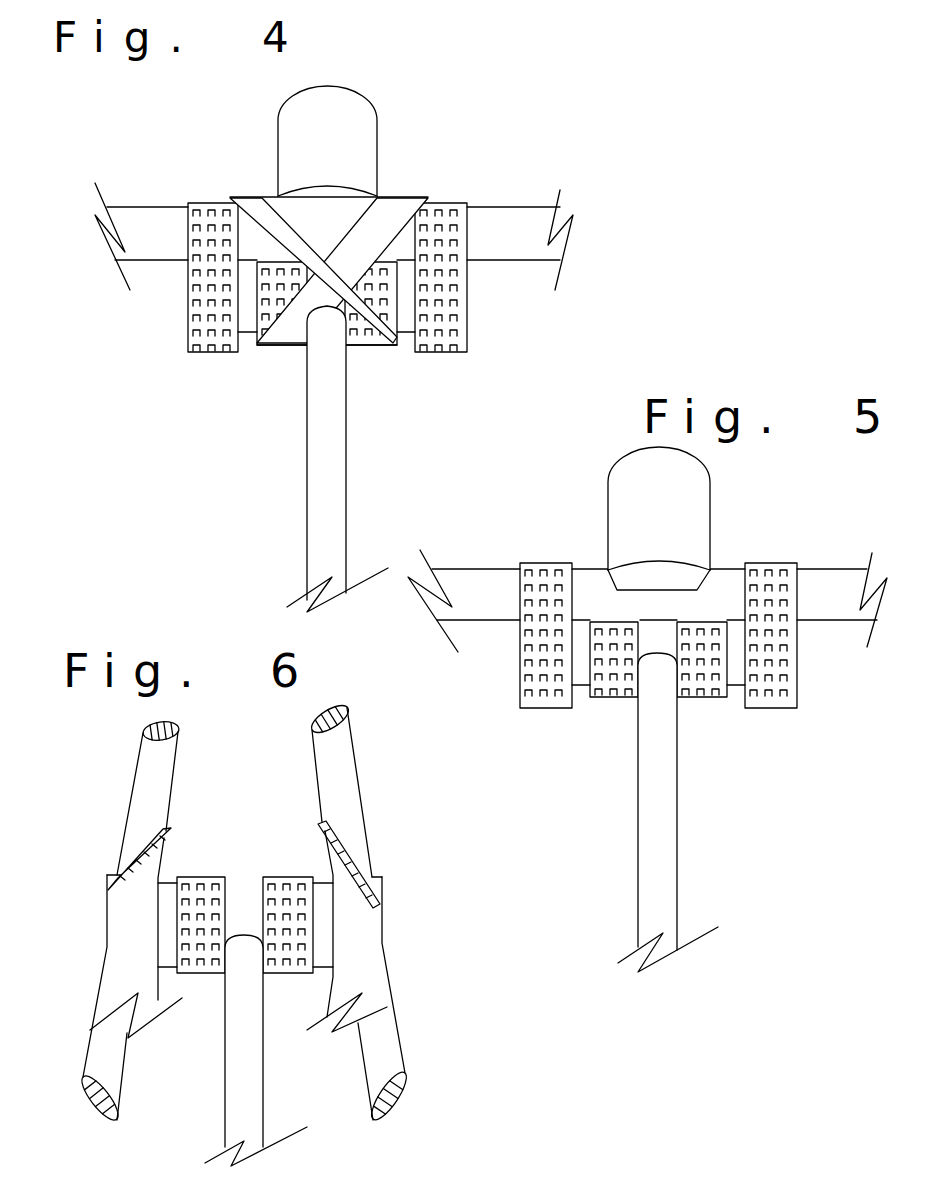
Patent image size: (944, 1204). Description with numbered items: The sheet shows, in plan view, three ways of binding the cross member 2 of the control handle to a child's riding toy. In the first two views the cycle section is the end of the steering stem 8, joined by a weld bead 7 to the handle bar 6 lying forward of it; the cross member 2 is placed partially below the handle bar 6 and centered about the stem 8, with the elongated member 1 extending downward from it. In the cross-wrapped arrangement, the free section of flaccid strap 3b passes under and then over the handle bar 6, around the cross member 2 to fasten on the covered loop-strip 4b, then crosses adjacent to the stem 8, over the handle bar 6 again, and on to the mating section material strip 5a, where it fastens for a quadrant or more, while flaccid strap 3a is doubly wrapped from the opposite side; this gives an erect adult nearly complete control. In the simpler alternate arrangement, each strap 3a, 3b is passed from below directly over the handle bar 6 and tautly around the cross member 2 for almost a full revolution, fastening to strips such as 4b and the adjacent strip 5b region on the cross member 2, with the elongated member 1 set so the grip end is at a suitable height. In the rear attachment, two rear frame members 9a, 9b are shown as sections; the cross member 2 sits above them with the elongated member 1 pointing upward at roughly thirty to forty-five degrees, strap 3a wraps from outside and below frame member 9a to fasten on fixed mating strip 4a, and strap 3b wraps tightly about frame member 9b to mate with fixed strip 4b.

In FIG. 4, the elongated member 1 is at (323, 502).
In FIG. 5, the elongated member 1 is at (655, 828).
In FIG. 6, the elongated member 1 is at (240, 1060).
In FIG. 4, the cross member 2 is at (397, 343).
In FIG. 5, the cross member 2 is at (578, 668).
In FIG. 6, the cross member 2 is at (252, 912).
In FIG. 4, the flaccid strap 3a is at (273, 215).
In FIG. 5, the flaccid strap 3a is at (543, 662).
In FIG. 6, the flaccid strap 3a is at (123, 940).
In FIG. 4, the flaccid strap 3b is at (380, 220).
In FIG. 5, the flaccid strap 3b is at (773, 662).
In FIG. 6, the flaccid strap 3b is at (364, 937).
In FIG. 6, the fixed mating strip 4a is at (108, 885).
In FIG. 6, the fixed strip 4b is at (450, 860).
In FIG. 4, the mating section material strip 5a is at (258, 343).
In FIG. 5, the mating section material strip 5a is at (608, 673).
In FIG. 6, the mating section material strip 5a is at (208, 910).
In FIG. 4, the right fastener strip 5b is at (405, 320).
In FIG. 5, the right fastener strip 5b is at (761, 772).
In FIG. 6, the right fastener strip 5b is at (299, 902).
In FIG. 4, the handle bar 6 is at (490, 232).
In FIG. 5, the handle bar 6 is at (727, 600).
In FIG. 4, the weld bead 7 is at (310, 197).
In FIG. 5, the weld bead 7 is at (667, 575).
In FIG. 4, the steering stem 8 is at (325, 103).
In FIG. 5, the steering stem 8 is at (647, 508).
In FIG. 6, the rear frame member 9a is at (156, 760).
In FIG. 6, the rear frame member 9b is at (333, 758).